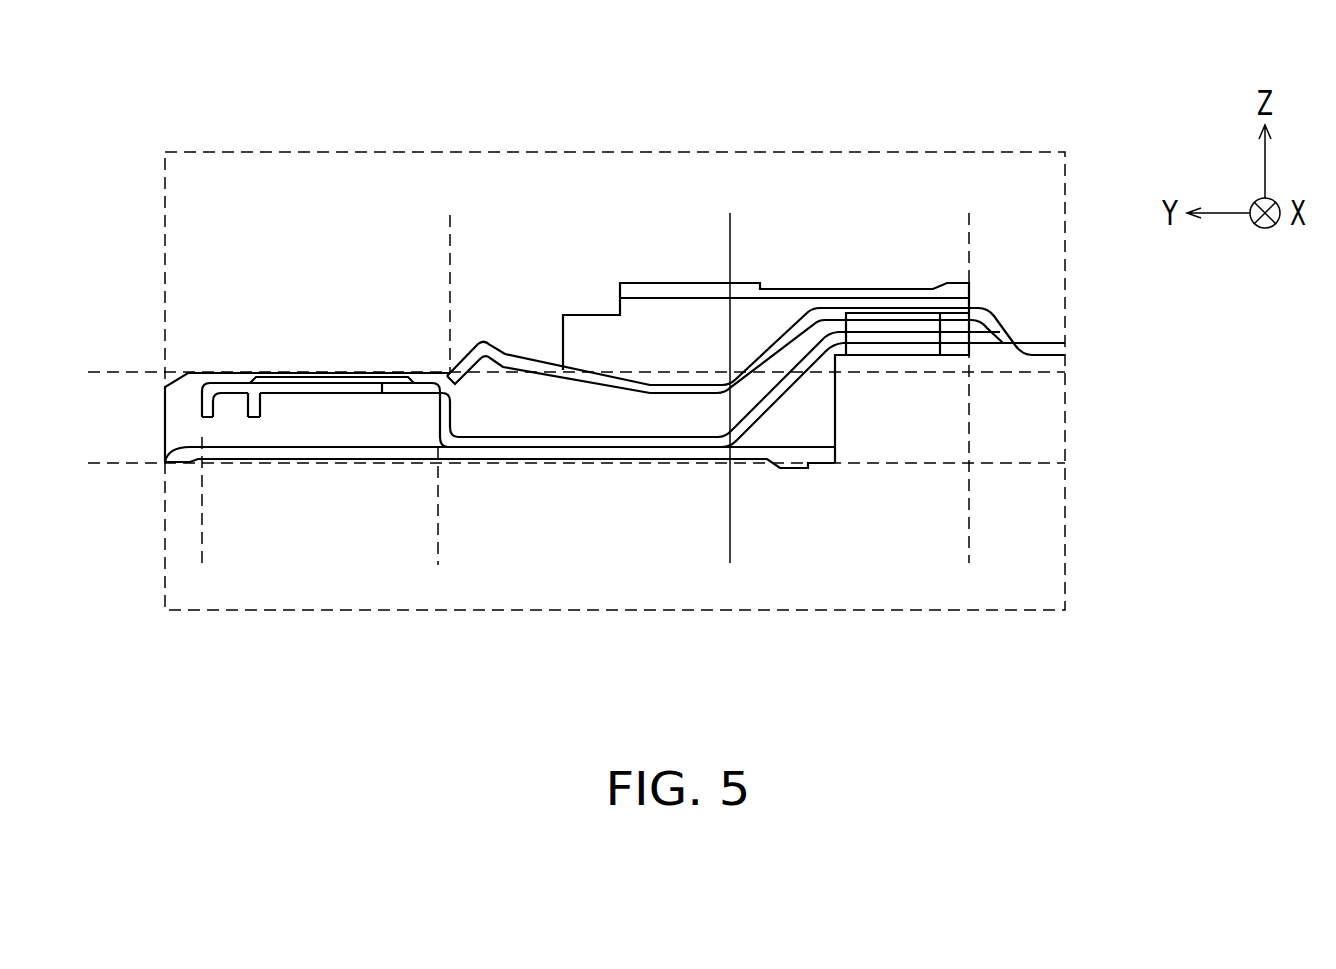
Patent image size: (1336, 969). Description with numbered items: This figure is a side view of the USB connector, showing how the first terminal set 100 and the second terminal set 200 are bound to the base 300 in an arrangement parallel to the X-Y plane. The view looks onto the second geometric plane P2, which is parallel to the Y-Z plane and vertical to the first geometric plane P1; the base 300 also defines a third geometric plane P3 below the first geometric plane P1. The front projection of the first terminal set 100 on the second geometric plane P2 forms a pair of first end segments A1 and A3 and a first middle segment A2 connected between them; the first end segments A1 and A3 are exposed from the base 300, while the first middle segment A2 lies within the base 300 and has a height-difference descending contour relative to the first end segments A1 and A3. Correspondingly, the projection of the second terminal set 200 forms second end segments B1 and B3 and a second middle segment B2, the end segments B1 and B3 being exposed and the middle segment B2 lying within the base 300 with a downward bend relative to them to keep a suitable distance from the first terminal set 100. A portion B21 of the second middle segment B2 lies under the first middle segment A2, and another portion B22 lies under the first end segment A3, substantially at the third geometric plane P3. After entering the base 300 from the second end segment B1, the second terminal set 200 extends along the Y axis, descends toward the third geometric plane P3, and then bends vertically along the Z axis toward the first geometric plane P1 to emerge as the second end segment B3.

The first terminal set 100 is at (1003, 308).
The second terminal set 200 is at (1032, 368).
The base 300 is at (183, 397).
The first geometric plane P1 is at (117, 372).
The second geometric plane P2 is at (165, 198).
The third geometric plane P3 is at (117, 463).
The first end segment A1 is at (969, 230).
The first middle segment A2 is at (969, 230).
The first end segment A3 is at (730, 230).
The second end segment B1 is at (969, 548).
The second middle segment B2 is at (969, 548).
The portion of the second middle segment B21 is at (969, 505).
The portion of the second middle segment B22 is at (730, 505).
The second end segment B3 is at (438, 548).